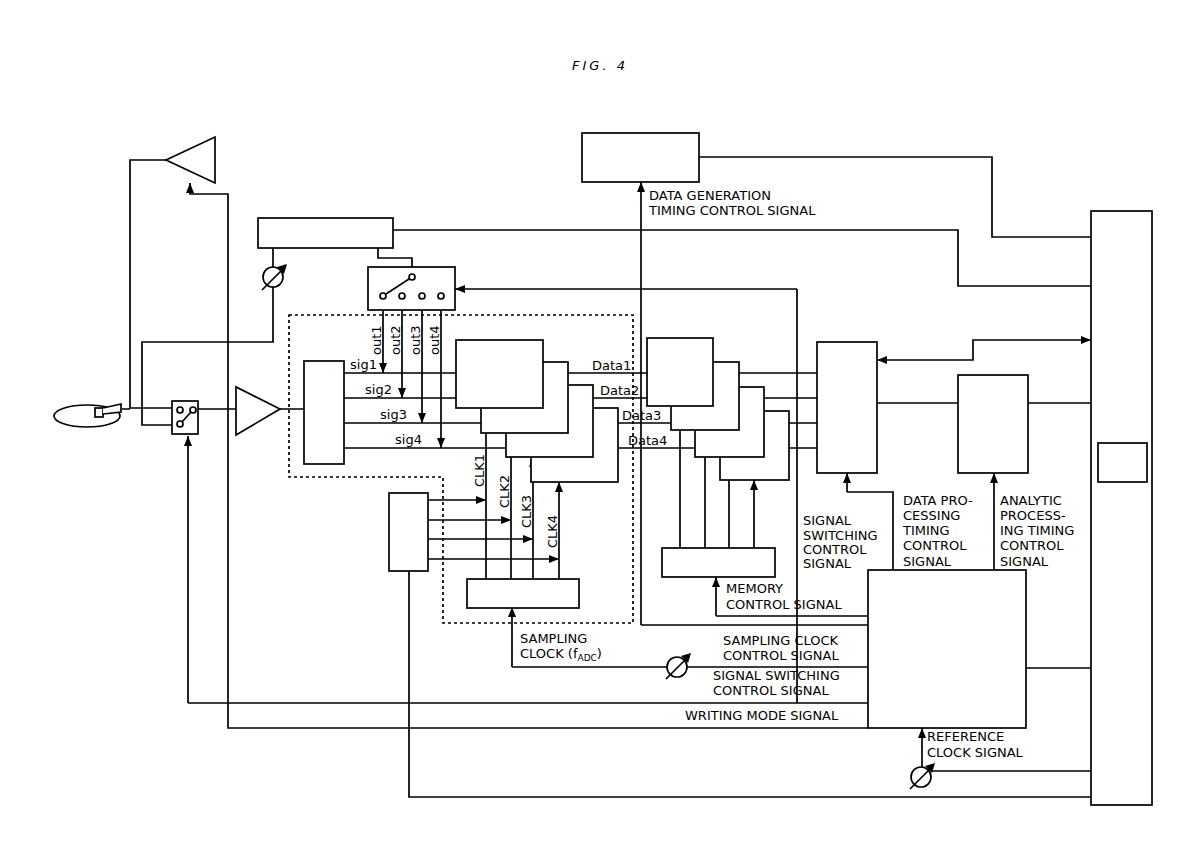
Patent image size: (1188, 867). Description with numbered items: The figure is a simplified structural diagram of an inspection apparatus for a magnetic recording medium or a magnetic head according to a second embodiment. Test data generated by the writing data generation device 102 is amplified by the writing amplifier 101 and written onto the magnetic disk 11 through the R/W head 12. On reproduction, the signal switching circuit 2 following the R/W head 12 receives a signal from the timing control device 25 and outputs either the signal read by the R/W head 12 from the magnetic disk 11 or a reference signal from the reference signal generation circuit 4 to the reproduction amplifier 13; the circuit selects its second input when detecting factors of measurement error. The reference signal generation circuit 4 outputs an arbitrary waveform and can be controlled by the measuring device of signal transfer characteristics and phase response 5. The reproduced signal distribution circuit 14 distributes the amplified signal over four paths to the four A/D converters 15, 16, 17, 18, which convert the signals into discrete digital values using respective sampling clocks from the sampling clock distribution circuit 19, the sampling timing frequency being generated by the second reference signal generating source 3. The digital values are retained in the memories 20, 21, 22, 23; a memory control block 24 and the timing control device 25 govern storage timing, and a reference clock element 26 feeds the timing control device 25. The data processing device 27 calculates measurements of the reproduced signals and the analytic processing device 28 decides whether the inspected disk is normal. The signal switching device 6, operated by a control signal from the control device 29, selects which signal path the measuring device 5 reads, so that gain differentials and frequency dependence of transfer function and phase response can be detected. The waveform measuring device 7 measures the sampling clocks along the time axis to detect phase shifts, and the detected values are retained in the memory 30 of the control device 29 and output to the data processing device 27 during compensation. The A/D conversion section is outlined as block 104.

The signal switching circuit 2 is at (185, 401).
The second reference signal generating source 3 is at (666, 675).
The reference signal generation circuit 4 is at (263, 272).
The measuring device of signal transfer characteristics and phase response 5 is at (330, 218).
The signal switching device 6 is at (457, 282).
The waveform measuring device 7 is at (389, 548).
The magnetic disk 11 is at (75, 400).
The R/W head 12 is at (108, 402).
The reproduction amplifier 13 is at (255, 387).
The reproduced signal distribution circuit 14 is at (320, 464).
The A/D converter 15 is at (527, 340).
The A/D converter 16 is at (550, 362).
The A/D converter 17 is at (578, 385).
The A/D converter 18 is at (593, 482).
The sampling clock distribution circuit 19 is at (579, 592).
The memory 20 is at (700, 338).
The memory 21 is at (725, 362).
The memory 22 is at (750, 387).
The memory 23 is at (775, 480).
The memory controller 24 is at (690, 577).
The timing control device 25 is at (1028, 608).
The reference clock oscillator 26 is at (910, 782).
The data processing device 27 is at (847, 342).
The analytic processing device 28 is at (995, 375).
The control device 29 is at (1115, 211).
The memory 30 is at (1120, 482).
The writing amplifier 101 is at (218, 152).
The writing data generation device 102 is at (645, 133).
The A/D conversion block 104 is at (583, 319).